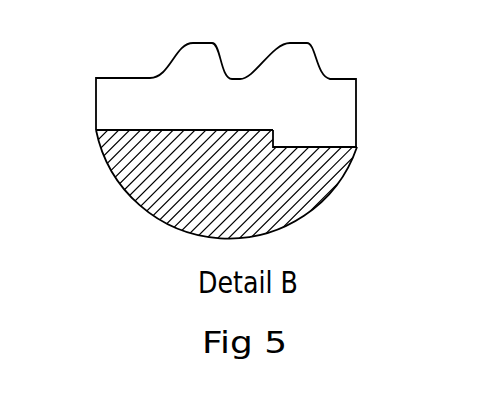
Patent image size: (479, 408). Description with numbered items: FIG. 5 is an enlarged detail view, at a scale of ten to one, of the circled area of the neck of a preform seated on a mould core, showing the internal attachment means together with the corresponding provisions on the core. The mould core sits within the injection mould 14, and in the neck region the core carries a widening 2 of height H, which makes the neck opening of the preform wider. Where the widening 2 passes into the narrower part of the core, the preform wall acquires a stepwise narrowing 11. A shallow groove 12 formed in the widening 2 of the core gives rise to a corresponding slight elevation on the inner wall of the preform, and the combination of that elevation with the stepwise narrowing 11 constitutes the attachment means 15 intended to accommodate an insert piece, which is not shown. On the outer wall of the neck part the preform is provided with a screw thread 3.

The widening 2 is at (272, 145).
The screw thread 3 is at (307, 57).
The stepwise narrowing 11 is at (273, 130).
The shallow groove 12 is at (230, 131).
The injection mould 14 is at (228, 130).
The attachment means 15 is at (136, 224).